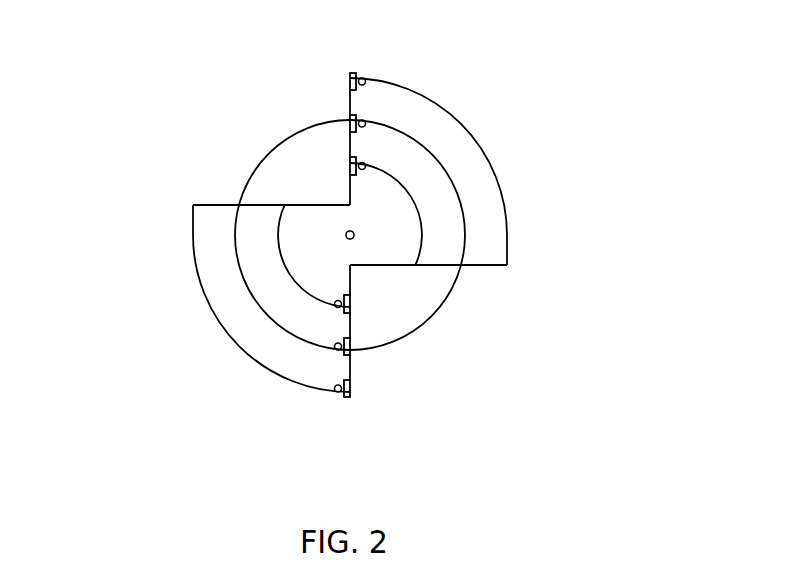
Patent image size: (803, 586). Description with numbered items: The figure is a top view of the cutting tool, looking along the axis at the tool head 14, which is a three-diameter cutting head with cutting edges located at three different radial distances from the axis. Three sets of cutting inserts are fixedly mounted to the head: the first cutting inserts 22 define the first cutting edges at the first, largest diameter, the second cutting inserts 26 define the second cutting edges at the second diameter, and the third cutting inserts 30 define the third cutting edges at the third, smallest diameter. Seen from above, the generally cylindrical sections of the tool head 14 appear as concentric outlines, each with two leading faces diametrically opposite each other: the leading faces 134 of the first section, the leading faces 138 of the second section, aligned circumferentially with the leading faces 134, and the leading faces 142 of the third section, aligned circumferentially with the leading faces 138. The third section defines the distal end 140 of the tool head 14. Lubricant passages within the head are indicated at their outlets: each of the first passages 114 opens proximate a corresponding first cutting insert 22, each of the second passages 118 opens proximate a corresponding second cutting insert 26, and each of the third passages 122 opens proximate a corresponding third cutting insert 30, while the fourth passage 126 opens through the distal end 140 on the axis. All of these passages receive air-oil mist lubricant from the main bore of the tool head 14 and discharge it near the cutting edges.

The tool head 14 is at (491, 197).
The first cutting inserts 22 is at (350, 75).
The second cutting inserts 26 is at (350, 120).
The third cutting inserts 30 is at (350, 170).
The first passages 114 is at (366, 81).
The second passages 118 is at (366, 123).
The third passages 122 is at (366, 166).
The fourth passage 126 is at (354, 235).
The leading faces 134 is at (350, 100).
The leading faces 138 is at (350, 148).
The leading faces 142 is at (350, 195).
The distal end 140 is at (307, 248).